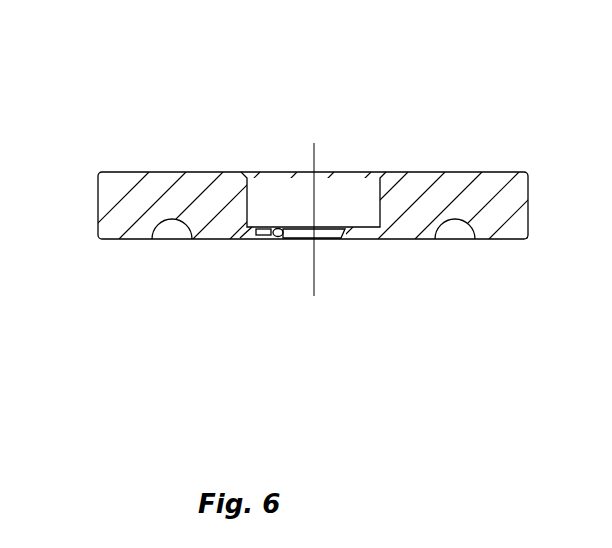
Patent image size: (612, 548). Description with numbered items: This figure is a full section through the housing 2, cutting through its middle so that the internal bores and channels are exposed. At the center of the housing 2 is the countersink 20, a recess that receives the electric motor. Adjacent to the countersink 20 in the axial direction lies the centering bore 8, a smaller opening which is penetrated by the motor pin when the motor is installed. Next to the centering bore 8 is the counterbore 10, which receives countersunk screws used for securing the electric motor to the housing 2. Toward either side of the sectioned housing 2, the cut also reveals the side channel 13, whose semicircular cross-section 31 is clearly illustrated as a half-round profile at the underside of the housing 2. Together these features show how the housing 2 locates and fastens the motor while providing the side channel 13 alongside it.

The housing 2 is at (443, 188).
The countersink 20 is at (348, 207).
The centering bore 8 is at (296, 230).
The counterbore 10 is at (267, 235).
The semicircular cross-section 31 is at (172, 228).
The side channel 13 is at (455, 228).